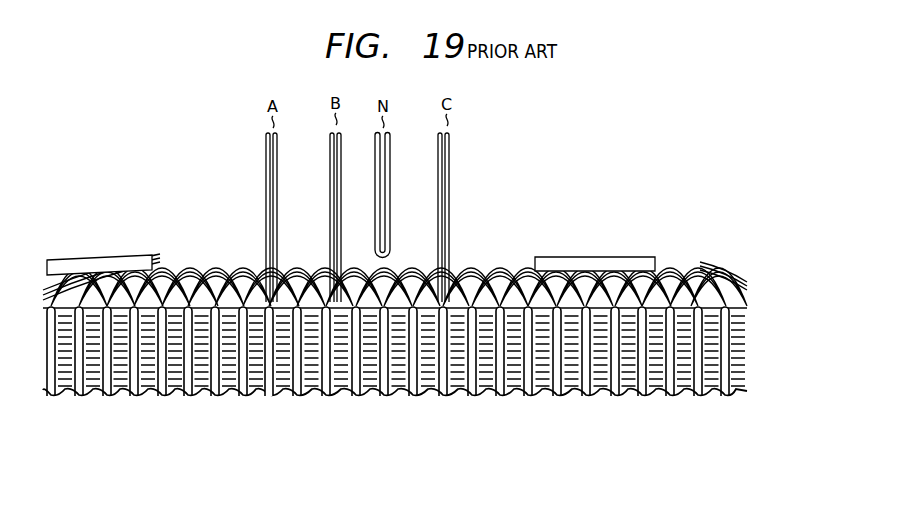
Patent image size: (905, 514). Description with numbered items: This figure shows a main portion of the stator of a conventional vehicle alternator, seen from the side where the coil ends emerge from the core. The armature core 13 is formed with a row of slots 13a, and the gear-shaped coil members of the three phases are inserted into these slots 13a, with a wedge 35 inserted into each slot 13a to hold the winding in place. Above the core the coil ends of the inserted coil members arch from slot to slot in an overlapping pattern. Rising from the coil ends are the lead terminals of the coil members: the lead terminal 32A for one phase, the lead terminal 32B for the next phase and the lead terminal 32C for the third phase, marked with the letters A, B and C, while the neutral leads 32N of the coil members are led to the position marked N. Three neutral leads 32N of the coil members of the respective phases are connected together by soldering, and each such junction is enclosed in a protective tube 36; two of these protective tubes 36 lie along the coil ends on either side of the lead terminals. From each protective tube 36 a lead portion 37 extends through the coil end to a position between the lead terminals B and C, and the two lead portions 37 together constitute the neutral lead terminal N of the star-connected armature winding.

The armature core 13 is at (457, 384).
The slots 13a is at (272, 392).
The wedge 35 is at (473, 394).
The lead portion 37 is at (230, 258).
The protective tube 36 is at (102, 257).
The lead terminal 32A is at (289, 196).
The lead terminal 32B is at (330, 159).
The neutral lead terminal 32N is at (461, 140).
The lead terminal 32C is at (449, 176).